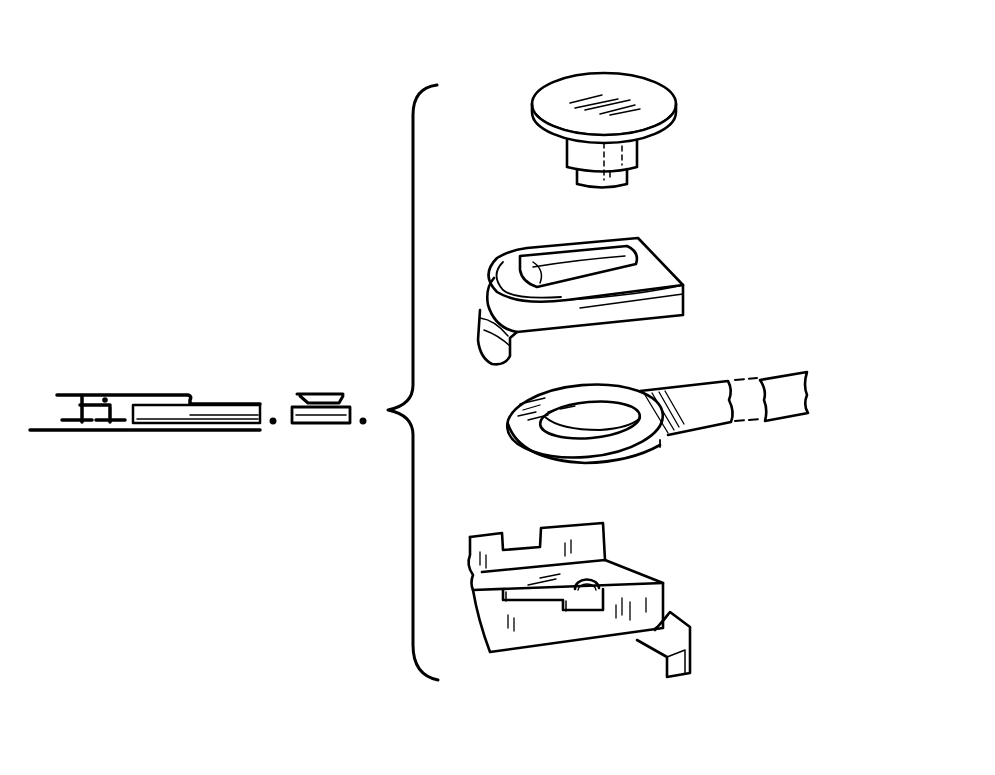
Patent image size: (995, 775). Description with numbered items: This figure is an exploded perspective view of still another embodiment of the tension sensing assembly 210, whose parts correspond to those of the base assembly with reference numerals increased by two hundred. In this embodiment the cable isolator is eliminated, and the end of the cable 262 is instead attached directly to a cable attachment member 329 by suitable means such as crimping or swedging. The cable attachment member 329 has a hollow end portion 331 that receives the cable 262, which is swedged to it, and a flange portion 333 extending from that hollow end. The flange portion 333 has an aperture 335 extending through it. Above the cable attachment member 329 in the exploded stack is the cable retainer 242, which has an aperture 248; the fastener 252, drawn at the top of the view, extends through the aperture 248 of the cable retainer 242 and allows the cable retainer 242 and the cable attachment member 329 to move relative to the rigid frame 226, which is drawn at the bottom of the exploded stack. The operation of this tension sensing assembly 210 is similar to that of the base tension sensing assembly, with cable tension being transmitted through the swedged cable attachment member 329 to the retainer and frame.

The tension sensing assembly 210 is at (474, 92).
The fastener 252 is at (680, 108).
The cam block 242 is at (590, 273).
The aperture 248 is at (610, 258).
The cable attachment member 329 is at (702, 382).
The flange portion 333 is at (629, 405).
The aperture 335 is at (580, 430).
The hollow end portion 331 is at (703, 413).
The cable 262 is at (783, 410).
The rigid frame 226 is at (573, 640).